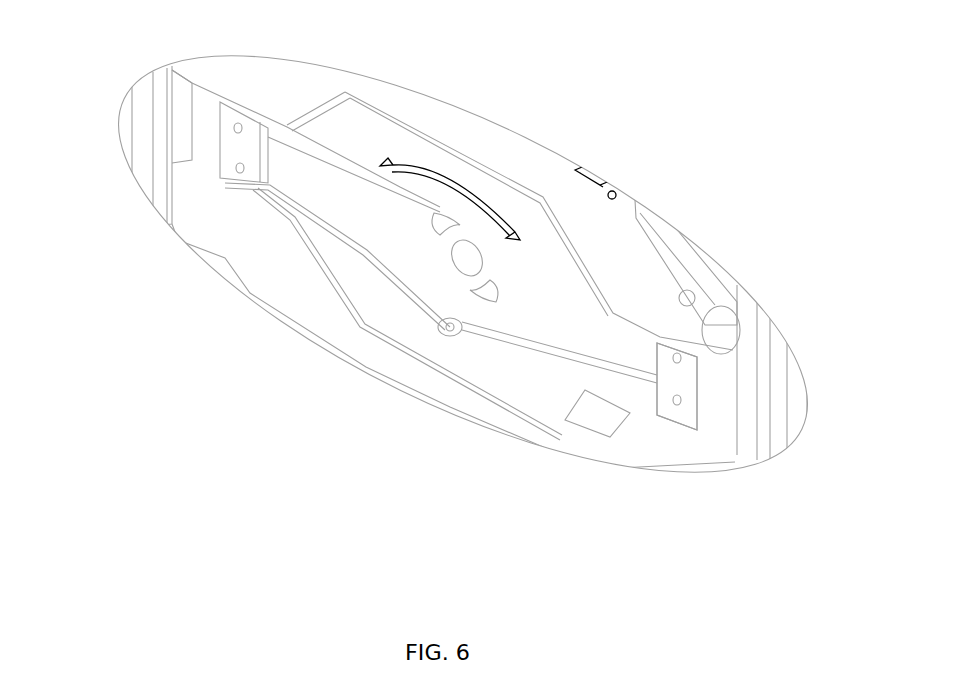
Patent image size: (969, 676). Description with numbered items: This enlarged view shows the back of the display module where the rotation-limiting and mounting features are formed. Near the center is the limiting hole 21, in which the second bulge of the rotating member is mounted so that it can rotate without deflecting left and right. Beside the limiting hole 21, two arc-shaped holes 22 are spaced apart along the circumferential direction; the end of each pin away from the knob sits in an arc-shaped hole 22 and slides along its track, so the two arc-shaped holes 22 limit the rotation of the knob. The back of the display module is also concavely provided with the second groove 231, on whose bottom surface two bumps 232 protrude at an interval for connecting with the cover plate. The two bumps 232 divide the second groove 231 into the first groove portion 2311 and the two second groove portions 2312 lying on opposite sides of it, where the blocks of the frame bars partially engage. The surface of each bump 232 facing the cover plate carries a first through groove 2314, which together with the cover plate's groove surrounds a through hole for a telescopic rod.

The limiting hole 21 is at (470, 257).
The arc-shaped hole 22 is at (500, 287).
The second groove 231 is at (445, 535).
The first groove portion 2311 is at (400, 232).
The second groove portion 2312 is at (727, 405).
The first through groove 2314 is at (858, 412).
The bump 232 is at (687, 360).